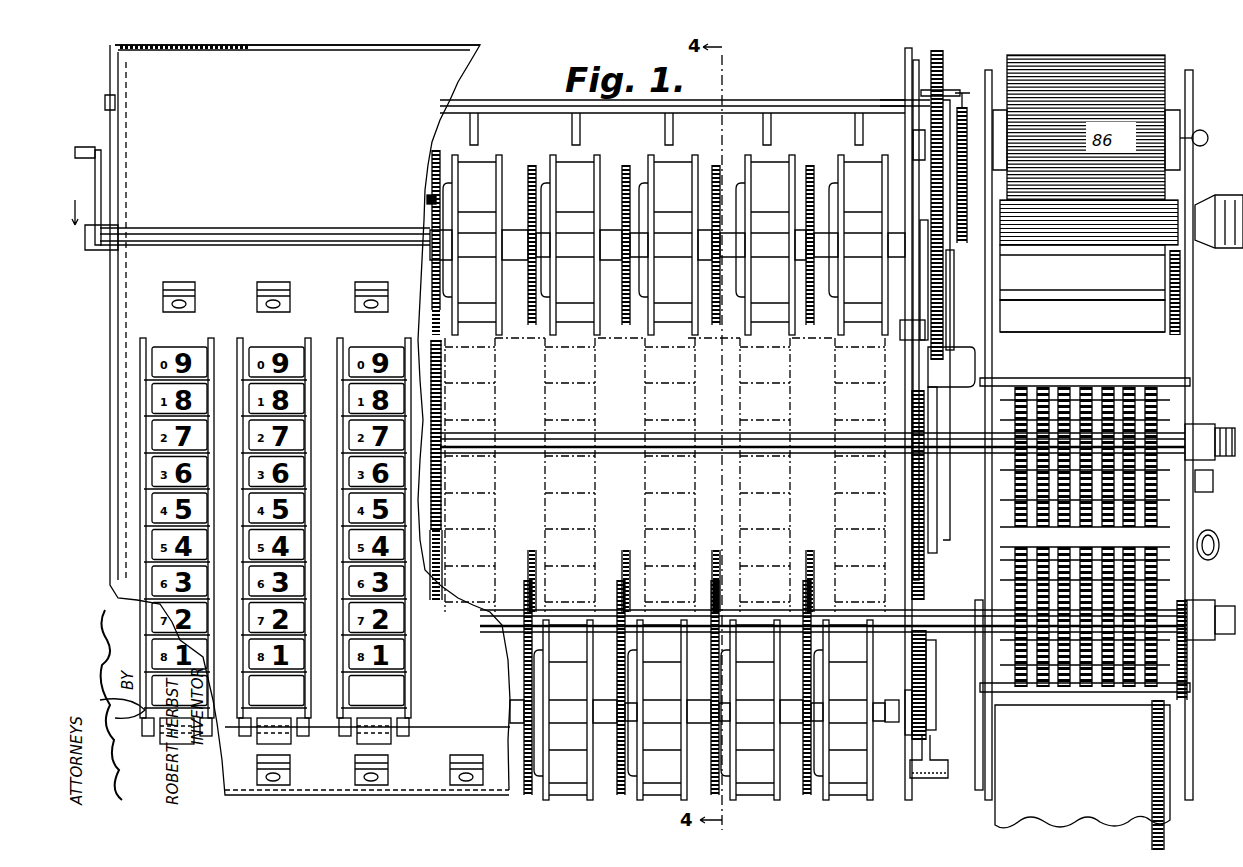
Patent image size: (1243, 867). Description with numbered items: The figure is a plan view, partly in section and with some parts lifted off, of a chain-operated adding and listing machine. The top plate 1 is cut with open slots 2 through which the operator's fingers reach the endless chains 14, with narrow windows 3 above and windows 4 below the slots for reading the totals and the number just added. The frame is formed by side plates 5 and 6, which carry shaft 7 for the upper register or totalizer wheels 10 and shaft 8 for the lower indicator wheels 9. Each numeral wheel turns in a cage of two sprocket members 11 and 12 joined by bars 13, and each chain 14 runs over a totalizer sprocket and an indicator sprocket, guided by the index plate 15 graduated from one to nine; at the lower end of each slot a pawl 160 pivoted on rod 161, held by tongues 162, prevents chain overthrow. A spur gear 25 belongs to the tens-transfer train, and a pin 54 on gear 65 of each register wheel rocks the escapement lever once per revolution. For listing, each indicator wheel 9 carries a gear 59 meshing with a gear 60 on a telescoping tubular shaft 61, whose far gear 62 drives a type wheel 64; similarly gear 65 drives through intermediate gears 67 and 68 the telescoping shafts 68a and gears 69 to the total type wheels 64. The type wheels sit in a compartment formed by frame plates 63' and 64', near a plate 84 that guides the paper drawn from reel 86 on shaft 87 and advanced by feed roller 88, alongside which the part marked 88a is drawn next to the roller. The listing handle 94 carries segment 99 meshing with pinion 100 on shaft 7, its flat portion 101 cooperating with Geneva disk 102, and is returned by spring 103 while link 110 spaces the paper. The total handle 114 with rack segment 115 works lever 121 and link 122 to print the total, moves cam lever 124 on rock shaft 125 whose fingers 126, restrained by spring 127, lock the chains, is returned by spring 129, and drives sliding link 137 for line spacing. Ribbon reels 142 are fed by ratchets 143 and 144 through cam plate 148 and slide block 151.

The top plate 1 is at (305, 420).
The open slots 2 is at (322, 345).
The windows 3 is at (275, 284).
The windows 4 is at (258, 762).
The side plate 5 is at (122, 356).
The side plate 6 is at (905, 62).
The shaft 7 is at (904, 320).
The shaft 8 is at (892, 700).
The indicator wheels 9 is at (860, 808).
The register or totalizer wheels 10 is at (492, 195).
The sprocket member 11 is at (700, 168).
The sprocket member 12 is at (650, 168).
The bars 13 is at (672, 165).
The endless chains 14 is at (345, 445).
The index plate 15 is at (415, 492).
The spur gear 25 is at (718, 168).
The pin or stud 54 is at (427, 198).
The gear wheel 59 is at (800, 790).
The gear wheel 60 is at (530, 552).
The tubular shaft 61 is at (505, 610).
The gear 62 is at (1165, 600).
The frame plate 63' is at (1110, 768).
The type wheel 64 is at (1087, 539).
The frame plate 64' is at (964, 695).
The gear 65 is at (438, 160).
The intermediate gear 67 is at (443, 372).
The intermediate gear 68 is at (443, 398).
The telescoping shafts 68a is at (955, 416).
The gears 69 is at (1195, 435).
The plate 84 is at (1175, 530).
The reel 86 is at (1086, 127).
The shaft 87 is at (1205, 139).
The feed roller 88 is at (1219, 221).
The feed roller 88a is at (1180, 195).
The handle lever 94 is at (930, 780).
The segment 99 is at (925, 572).
The pinion 100 is at (932, 672).
The flat portion 101 is at (926, 655).
The Geneva disk 102 is at (930, 705).
The spring 103 is at (905, 470).
The link 110 is at (937, 480).
The handle 114 is at (955, 318).
The rack segment 115 is at (944, 75).
The lever 121 is at (900, 330).
The link 122 is at (928, 370).
The cam lever 124 is at (905, 108).
The rock shaft 125 is at (818, 95).
The fingers 126 is at (858, 125).
The spring 127 is at (913, 140).
The spring 129 is at (968, 160).
The sliding link 137 is at (915, 310).
The ribbon reels 142 is at (1160, 300).
The driving ratchet 143 is at (1182, 330).
The driving ratchet 144 is at (1165, 790).
The cam plate 148 is at (1190, 668).
The slide block 151 is at (1213, 483).
The pawl 160 is at (390, 738).
The rod 161 is at (330, 735).
The tongues 162 is at (312, 730).